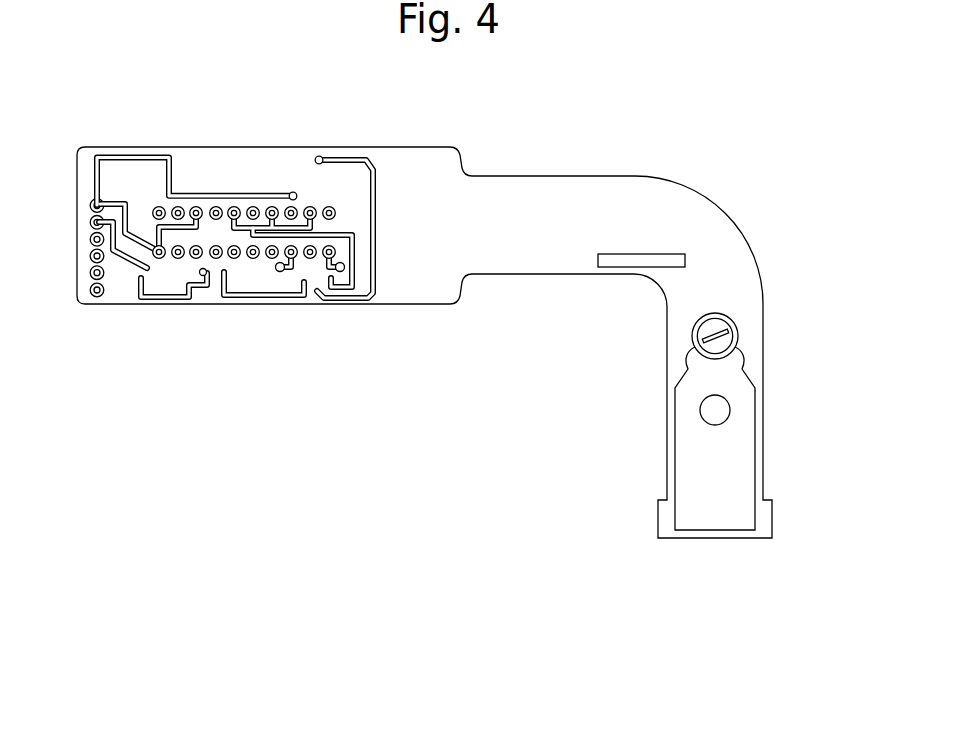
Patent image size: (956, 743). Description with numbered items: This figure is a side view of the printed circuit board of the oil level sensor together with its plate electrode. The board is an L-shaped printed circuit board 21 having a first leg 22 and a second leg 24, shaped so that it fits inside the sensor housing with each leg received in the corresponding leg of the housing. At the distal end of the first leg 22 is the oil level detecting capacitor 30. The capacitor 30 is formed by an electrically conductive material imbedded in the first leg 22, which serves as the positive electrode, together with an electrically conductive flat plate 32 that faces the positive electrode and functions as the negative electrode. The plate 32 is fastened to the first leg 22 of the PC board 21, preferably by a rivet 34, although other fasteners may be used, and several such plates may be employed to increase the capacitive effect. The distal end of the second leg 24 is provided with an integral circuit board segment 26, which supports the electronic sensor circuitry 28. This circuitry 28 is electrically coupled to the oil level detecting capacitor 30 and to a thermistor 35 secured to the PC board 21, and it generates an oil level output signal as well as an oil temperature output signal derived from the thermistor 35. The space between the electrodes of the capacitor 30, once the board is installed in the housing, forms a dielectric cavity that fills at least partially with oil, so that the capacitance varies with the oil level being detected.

The L-shaped printed circuit board 21 is at (625, 177).
The first leg 22 is at (667, 373).
The second leg 24 is at (523, 274).
The circuit board segment 26 is at (262, 304).
The electronic sensor circuitry 28 is at (145, 148).
The oil level detecting capacitor 30 is at (800, 440).
The electrically conductive flat plate 32 is at (693, 467).
The rivet 34 is at (722, 348).
The thermistor 35 is at (618, 268).